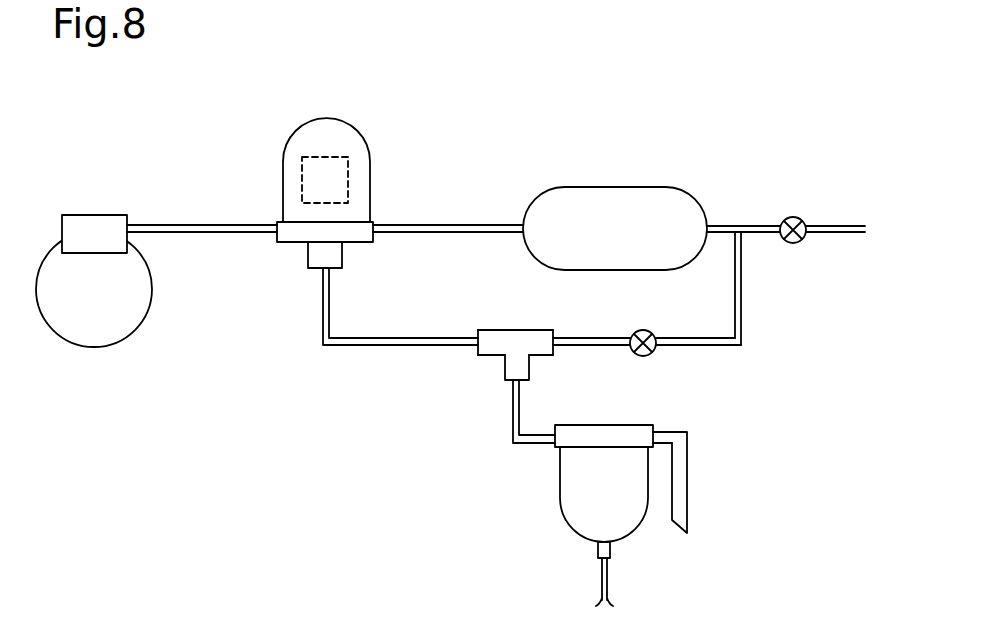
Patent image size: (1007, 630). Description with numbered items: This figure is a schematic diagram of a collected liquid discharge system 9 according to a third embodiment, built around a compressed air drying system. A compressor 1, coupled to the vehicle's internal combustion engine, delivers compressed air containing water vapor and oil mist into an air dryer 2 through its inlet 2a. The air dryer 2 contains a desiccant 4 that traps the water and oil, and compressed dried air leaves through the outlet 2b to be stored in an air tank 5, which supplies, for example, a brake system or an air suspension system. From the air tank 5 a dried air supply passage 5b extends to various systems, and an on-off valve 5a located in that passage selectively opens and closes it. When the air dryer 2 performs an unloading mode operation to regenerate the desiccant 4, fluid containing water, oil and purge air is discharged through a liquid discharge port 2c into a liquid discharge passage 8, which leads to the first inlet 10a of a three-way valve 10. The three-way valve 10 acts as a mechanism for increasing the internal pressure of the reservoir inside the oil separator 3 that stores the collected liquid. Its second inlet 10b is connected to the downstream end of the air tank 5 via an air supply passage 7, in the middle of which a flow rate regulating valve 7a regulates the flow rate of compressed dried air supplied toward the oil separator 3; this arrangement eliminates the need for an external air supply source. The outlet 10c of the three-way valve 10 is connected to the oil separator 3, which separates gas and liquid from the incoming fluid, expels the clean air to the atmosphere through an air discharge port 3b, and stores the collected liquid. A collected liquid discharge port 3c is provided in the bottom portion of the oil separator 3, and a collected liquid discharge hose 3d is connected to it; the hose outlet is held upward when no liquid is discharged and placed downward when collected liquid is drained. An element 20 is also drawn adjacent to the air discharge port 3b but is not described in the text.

The compressor 1 is at (97, 215).
The air dryer 2 is at (329, 118).
The inlet 2a is at (273, 224).
The outlet 2b is at (377, 222).
The liquid discharge port 2c is at (320, 270).
The desiccant 4 is at (348, 167).
The air tank 5 is at (613, 187).
The on-off valve 5a is at (792, 217).
The dried air supply passage 5b is at (755, 227).
The air supply passage 7 is at (697, 338).
The flow rate regulating valve 7a is at (645, 332).
The liquid discharge passage 8 is at (365, 347).
The three-way valve 10 is at (512, 330).
The first inlet 10a is at (473, 337).
The second inlet 10b is at (563, 337).
The outlet 10c is at (512, 385).
The oil separator 3 is at (612, 425).
The air discharge port 3b is at (655, 427).
The collected liquid discharge port 3c is at (547, 447).
The collected liquid discharge hose 3d is at (602, 582).
The receptacle 20 is at (688, 463).
The collected liquid discharge system 9 is at (463, 504).